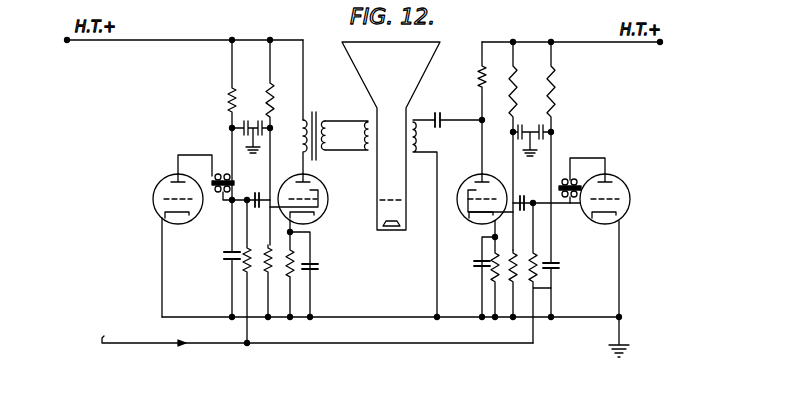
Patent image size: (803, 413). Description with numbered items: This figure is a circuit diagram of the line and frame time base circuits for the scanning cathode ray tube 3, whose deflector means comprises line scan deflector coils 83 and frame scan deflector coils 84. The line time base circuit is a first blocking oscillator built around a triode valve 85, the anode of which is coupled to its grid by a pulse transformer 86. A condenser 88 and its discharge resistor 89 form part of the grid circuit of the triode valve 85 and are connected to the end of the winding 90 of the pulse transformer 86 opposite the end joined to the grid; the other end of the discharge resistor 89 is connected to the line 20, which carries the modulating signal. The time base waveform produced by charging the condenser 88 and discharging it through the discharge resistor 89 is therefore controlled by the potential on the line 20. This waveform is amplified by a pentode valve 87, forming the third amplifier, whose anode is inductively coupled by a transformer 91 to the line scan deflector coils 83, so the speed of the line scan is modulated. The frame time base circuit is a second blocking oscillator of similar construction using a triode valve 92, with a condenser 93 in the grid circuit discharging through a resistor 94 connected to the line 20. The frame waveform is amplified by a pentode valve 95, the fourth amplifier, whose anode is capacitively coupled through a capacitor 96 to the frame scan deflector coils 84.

The scanning cathode ray tube 3 is at (397, 83).
The line scan deflector coils 83 is at (366, 152).
The frame scan deflector coils 84 is at (413, 153).
The triode valve 85 is at (158, 211).
The pulse transformer 86 is at (220, 171).
The pentode valve 87 is at (327, 209).
The condenser 88 is at (228, 256).
The discharge resistor 89 is at (243, 269).
The winding 90 is at (237, 210).
The transformer 91 is at (314, 117).
The triode valve 92 is at (627, 211).
The condenser 93 is at (553, 266).
The resistor 94 is at (551, 289).
The pentode valve 95 is at (463, 219).
The capacitor 96 is at (449, 106).
The line 20 is at (164, 344).